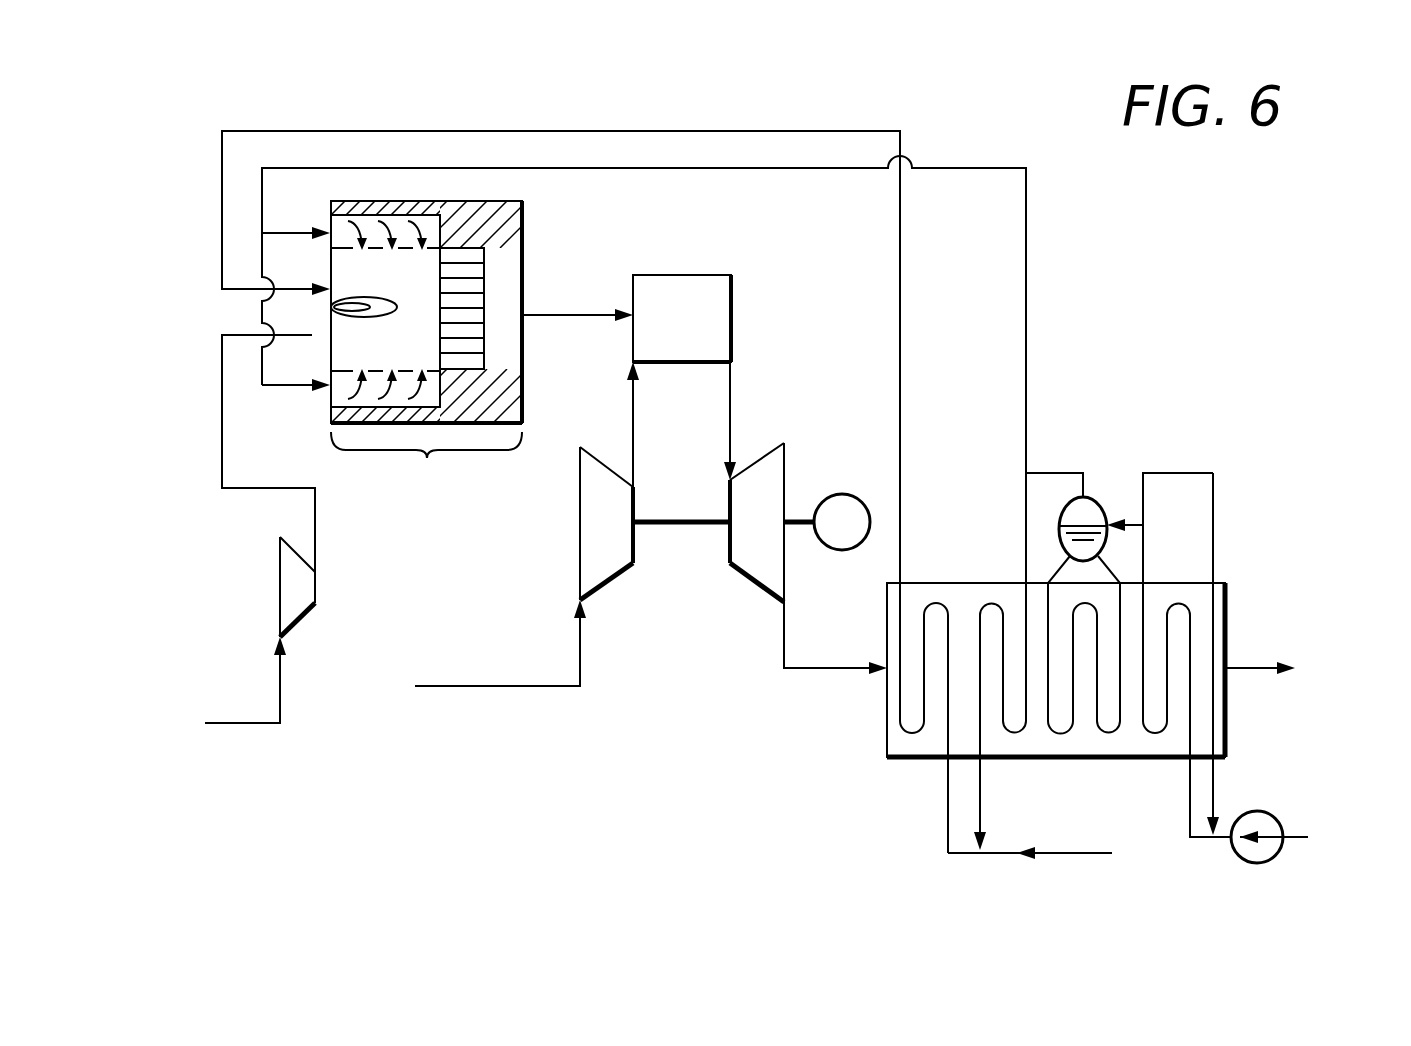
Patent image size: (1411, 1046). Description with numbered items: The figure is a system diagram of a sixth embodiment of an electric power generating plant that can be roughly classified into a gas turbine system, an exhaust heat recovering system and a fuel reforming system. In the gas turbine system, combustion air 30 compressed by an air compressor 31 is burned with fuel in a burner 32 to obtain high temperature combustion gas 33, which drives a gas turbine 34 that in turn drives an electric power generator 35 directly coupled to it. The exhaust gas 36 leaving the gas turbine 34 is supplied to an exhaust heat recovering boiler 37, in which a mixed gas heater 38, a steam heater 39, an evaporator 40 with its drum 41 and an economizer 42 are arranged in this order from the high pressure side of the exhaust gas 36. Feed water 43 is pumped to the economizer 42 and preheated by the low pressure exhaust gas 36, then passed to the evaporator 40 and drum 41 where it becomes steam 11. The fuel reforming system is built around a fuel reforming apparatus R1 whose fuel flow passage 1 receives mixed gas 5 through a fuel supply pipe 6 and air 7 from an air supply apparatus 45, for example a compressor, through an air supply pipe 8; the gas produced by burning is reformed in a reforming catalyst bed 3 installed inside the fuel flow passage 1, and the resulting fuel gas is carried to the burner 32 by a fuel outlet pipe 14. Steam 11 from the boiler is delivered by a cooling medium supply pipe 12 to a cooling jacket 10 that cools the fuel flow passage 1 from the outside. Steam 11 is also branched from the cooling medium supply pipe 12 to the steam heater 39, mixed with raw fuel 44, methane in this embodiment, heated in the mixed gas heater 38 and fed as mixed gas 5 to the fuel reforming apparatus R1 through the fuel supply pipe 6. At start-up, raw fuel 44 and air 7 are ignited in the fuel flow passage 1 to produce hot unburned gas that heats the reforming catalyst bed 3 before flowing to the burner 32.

The fuel flow passage 1 is at (402, 342).
The reforming catalyst bed 3 is at (478, 300).
The mixed gas 5 is at (290, 286).
The fuel supply pipe 6 is at (758, 129).
The air 7 is at (255, 727).
The air supply pipe 8 is at (222, 417).
The cooling jacket 10 is at (340, 226).
The steam 11 is at (272, 228).
The cooling medium supply pipe 12 is at (957, 166).
The fuel outlet pipe 14 is at (558, 313).
The combustion air 30 is at (633, 395).
The air compressor 31 is at (580, 512).
The burner 32 is at (733, 333).
The high temperature combustion gas 33 is at (730, 408).
The gas turbine 34 is at (784, 443).
The electric power generator 35 is at (850, 494).
The exhaust gas 36 is at (830, 670).
The exhaust heat recovering boiler 37 is at (1226, 582).
The mixed gas heater 38 is at (913, 737).
The steam heater 39 is at (1015, 737).
The evaporator 40 is at (1108, 737).
The drum 41 is at (1093, 497).
The economizer 42 is at (1155, 758).
The feed water 43 is at (1297, 833).
The raw fuel 44 is at (1068, 855).
The air supply apparatus 45 is at (280, 582).
The fuel reforming apparatus R1 is at (428, 475).